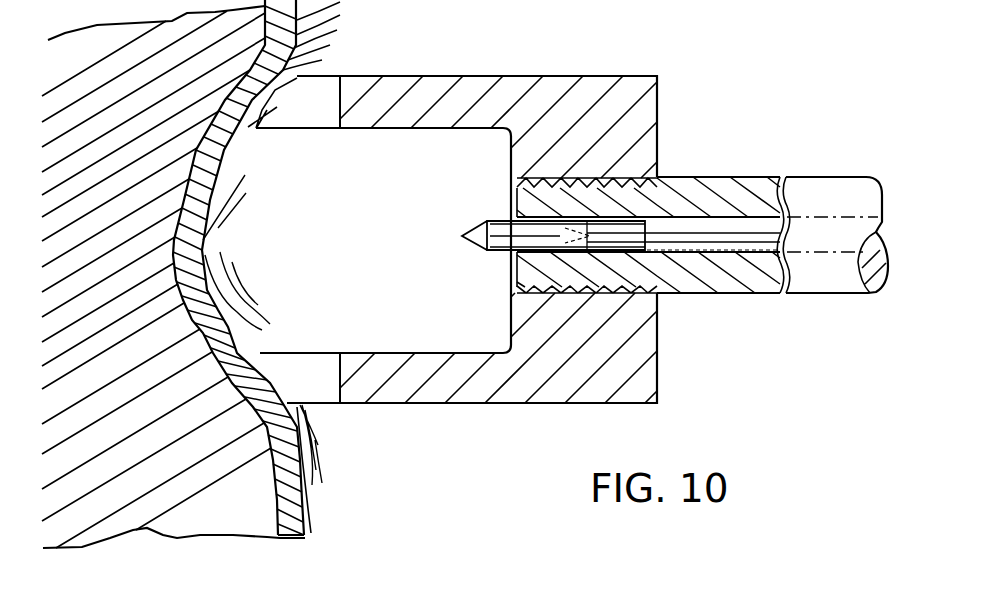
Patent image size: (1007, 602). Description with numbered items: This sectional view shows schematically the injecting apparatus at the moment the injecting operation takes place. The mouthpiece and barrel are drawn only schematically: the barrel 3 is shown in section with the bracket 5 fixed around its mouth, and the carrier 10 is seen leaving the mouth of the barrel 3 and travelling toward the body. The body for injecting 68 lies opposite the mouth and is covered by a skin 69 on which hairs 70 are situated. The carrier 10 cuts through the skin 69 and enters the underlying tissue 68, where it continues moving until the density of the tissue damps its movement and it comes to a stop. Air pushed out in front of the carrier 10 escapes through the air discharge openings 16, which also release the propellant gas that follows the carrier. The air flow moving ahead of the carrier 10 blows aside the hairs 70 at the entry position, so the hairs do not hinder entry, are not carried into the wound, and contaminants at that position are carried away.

The barrel 3 is at (718, 183).
The bracket 5 is at (472, 393).
The carrier 10 is at (612, 297).
The air discharge openings 16 is at (350, 63).
The body for injecting 68 is at (203, 512).
The skin 69 is at (313, 520).
The hairs 70 is at (322, 482).